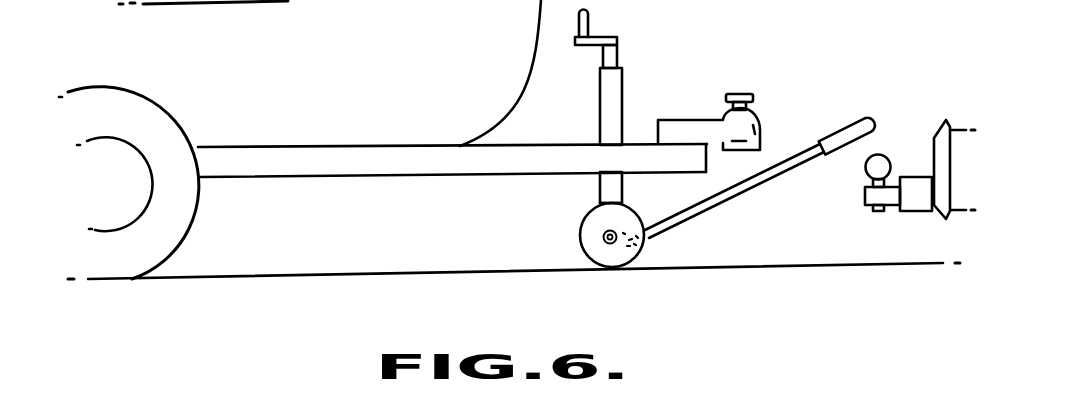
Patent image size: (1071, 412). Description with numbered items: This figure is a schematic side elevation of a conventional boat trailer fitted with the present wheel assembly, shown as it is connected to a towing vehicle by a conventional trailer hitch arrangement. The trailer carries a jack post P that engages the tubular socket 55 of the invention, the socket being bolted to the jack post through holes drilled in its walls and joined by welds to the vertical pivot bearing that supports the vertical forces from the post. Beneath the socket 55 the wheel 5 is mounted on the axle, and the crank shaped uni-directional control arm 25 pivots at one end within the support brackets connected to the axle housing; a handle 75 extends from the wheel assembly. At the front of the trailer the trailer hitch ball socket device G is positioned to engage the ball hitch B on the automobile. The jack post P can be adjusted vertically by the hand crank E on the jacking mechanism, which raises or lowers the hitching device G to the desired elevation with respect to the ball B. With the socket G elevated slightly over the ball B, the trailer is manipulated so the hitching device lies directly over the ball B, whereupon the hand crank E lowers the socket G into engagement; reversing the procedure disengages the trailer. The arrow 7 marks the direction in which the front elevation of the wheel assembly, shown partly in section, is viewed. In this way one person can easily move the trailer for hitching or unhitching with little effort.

The wheel 5 is at (578, 249).
The arrow 7— 7 is at (609, 281).
The crank shaped uni-directional control arm 25 is at (590, 205).
The tubular socket 55 is at (600, 186).
The handle lever 75 is at (717, 204).
The ball hitch B is at (887, 154).
The hand crank E is at (613, 37).
The trailer hitch ball socket device G is at (759, 123).
The jack post P is at (621, 133).